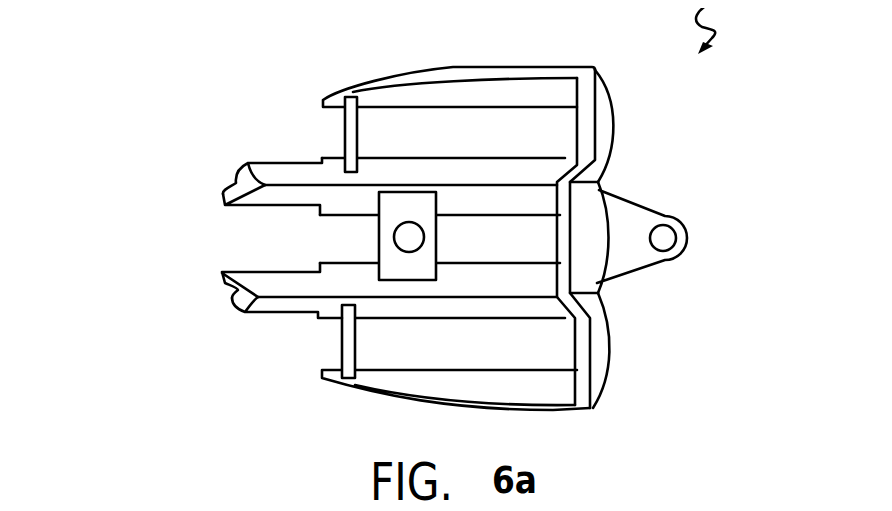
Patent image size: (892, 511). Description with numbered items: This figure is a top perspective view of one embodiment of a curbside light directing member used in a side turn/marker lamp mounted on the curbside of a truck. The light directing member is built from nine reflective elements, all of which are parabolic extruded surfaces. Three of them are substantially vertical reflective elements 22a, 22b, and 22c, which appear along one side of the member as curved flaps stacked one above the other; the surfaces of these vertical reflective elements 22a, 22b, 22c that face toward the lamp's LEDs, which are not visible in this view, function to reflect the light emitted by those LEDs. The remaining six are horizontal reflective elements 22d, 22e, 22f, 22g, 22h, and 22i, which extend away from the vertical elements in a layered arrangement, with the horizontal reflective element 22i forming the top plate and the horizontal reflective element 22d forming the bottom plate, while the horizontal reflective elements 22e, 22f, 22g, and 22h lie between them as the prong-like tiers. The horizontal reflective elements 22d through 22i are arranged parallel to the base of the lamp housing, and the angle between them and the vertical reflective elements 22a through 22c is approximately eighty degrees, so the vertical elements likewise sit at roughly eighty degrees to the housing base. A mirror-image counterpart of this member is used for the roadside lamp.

The vertical reflective element 22a is at (603, 133).
The vertical reflective element 22b is at (598, 255).
The vertical reflective element 22c is at (600, 355).
The horizontal reflective element 22d is at (418, 383).
The horizontal reflective element 22e is at (265, 317).
The horizontal reflective element 22f is at (260, 272).
The horizontal reflective element 22g is at (258, 210).
The horizontal reflective element 22h is at (287, 170).
The horizontal reflective element 22i is at (498, 85).